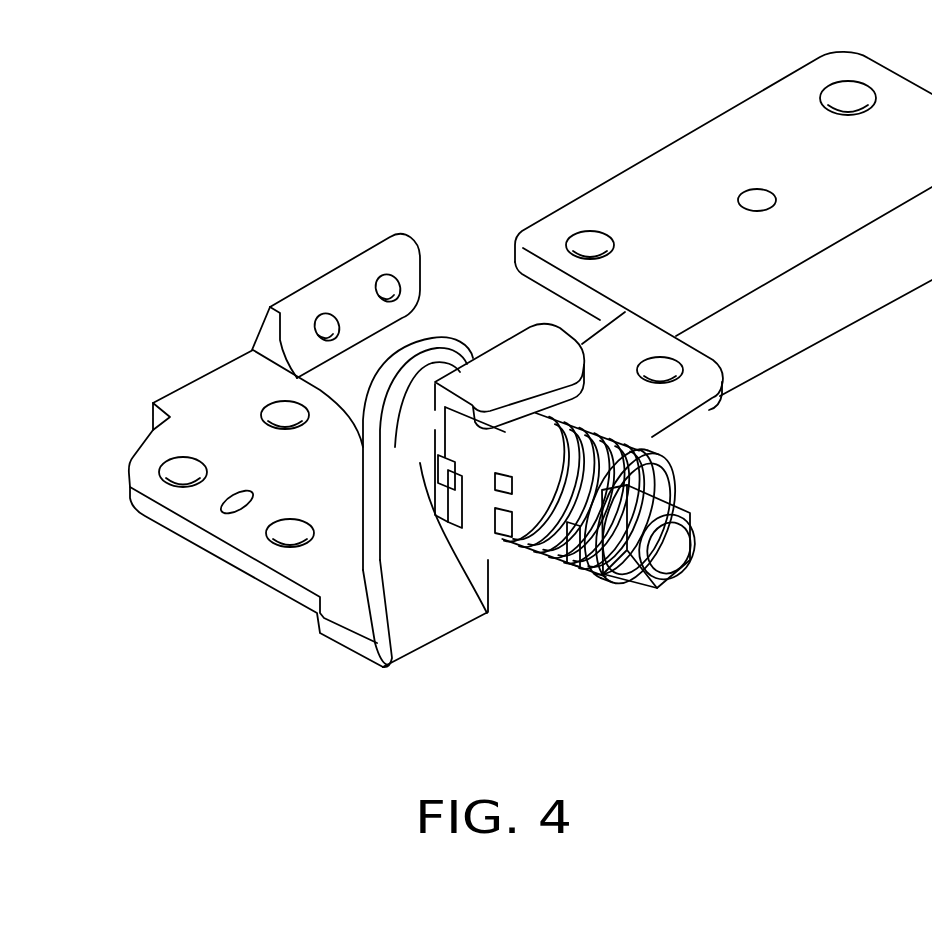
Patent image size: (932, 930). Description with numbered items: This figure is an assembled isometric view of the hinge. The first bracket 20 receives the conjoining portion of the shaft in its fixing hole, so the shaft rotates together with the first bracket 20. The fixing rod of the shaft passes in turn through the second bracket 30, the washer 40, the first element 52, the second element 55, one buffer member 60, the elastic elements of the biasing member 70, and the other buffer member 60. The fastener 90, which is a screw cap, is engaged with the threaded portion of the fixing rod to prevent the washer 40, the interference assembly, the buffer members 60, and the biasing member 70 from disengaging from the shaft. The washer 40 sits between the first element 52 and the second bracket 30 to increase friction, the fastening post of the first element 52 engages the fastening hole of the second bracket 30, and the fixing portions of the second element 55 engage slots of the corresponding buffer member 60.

The first bracket 20 is at (212, 400).
The second bracket 30 is at (660, 173).
The washer 40 is at (488, 402).
The first element 52 is at (467, 502).
The second element 55 is at (493, 507).
The buffer member 60 is at (523, 547).
The biasing member 70 is at (598, 445).
The fastener 90 is at (617, 562).